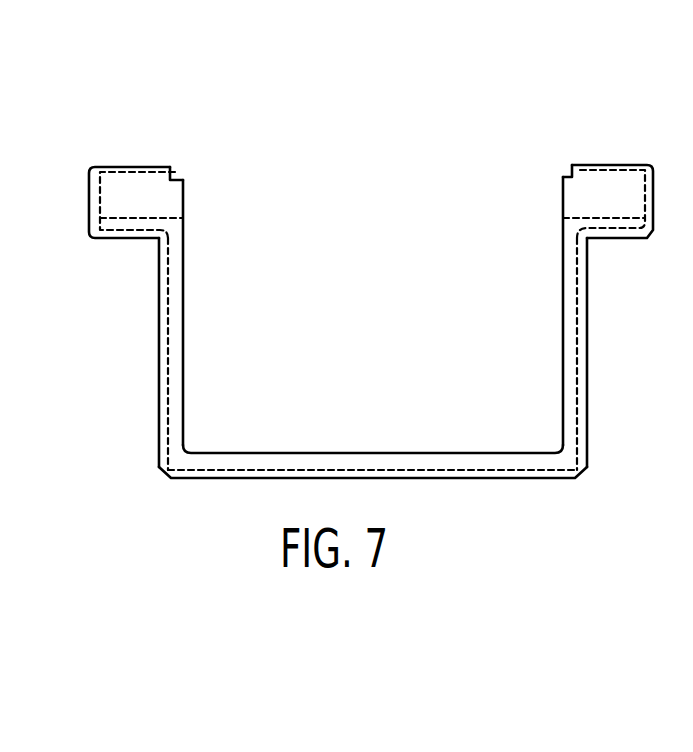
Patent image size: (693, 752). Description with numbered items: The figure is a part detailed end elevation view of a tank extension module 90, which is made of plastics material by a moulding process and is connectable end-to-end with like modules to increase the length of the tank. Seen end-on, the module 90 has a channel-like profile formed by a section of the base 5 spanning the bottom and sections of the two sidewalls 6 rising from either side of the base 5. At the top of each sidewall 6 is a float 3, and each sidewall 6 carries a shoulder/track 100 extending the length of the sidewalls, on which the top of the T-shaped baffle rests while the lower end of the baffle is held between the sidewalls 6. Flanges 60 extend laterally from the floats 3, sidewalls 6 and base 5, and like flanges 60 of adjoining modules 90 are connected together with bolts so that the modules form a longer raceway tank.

The float 3 is at (133, 175).
The shoulder/track 100 is at (182, 178).
The sidewall 6 is at (185, 235).
The base 5 is at (468, 453).
The flange 60 is at (160, 398).
The tank extension module 90 is at (218, 482).